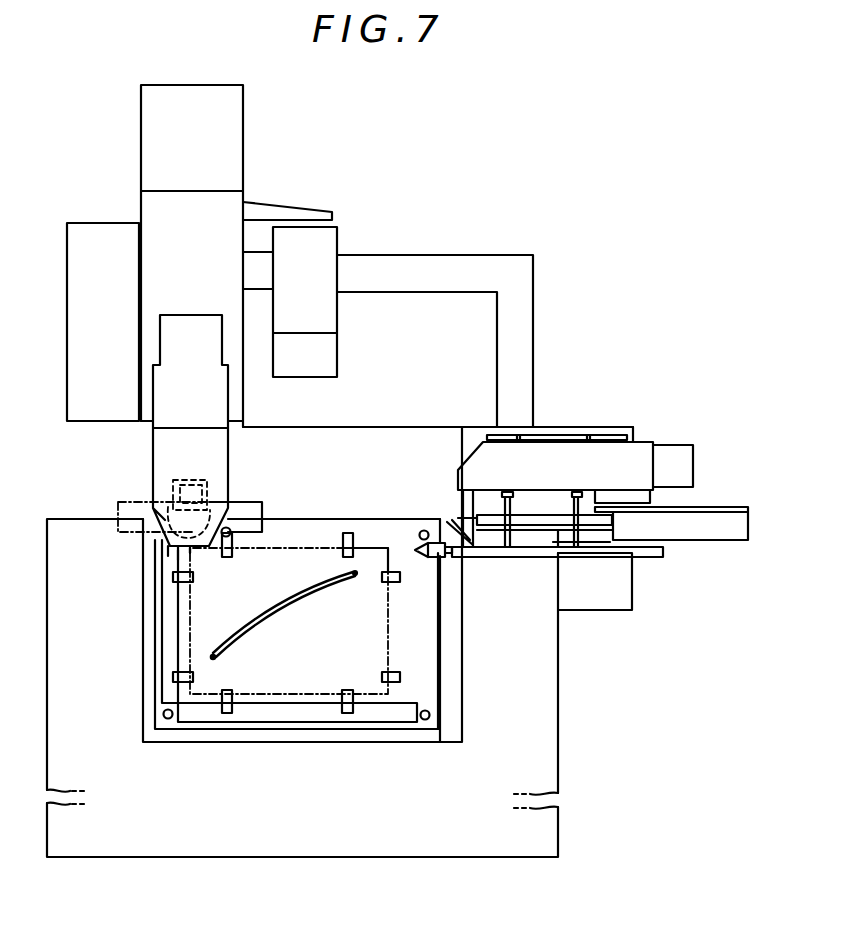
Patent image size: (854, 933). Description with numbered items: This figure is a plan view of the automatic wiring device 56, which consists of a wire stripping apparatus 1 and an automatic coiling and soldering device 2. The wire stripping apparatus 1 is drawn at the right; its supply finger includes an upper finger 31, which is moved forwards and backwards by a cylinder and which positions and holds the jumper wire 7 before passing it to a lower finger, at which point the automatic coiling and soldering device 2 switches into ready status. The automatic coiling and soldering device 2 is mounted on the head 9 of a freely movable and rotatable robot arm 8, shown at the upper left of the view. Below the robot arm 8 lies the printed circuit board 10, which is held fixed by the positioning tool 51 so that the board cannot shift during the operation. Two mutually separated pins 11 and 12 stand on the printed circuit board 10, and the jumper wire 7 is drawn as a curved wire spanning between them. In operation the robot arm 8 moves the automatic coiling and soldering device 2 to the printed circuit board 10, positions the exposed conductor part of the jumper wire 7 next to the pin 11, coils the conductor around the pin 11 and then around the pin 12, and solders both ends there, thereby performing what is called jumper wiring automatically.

The automatic wiring device 56 is at (443, 232).
The wire stripping apparatus 1 is at (599, 420).
The robot arm 8 is at (152, 448).
The head 9 is at (180, 510).
The automatic coiling and soldering device 2 is at (246, 498).
The upper finger 31 is at (417, 541).
The pin 12 is at (357, 574).
The printed circuit board 10 is at (297, 677).
The jumper wire 7 is at (243, 622).
The pin 11 is at (213, 660).
The positioning tool 51 is at (352, 714).